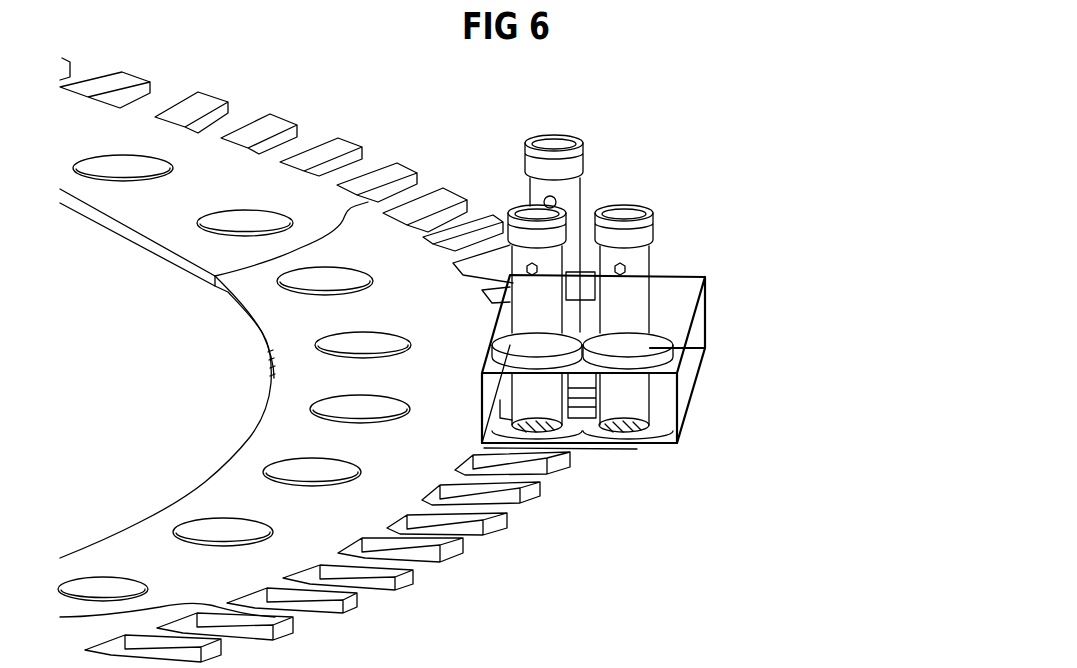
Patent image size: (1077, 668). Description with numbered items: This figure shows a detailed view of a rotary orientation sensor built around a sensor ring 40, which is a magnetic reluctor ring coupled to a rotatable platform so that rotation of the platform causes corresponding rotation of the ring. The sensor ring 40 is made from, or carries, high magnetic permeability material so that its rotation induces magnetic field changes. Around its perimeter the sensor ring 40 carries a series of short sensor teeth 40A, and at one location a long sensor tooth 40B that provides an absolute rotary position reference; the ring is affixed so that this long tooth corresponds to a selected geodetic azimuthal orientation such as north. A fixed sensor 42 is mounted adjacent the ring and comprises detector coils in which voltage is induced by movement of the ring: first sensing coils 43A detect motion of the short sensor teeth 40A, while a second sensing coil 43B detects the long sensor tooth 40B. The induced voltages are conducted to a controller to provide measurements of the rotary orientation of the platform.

The sensor ring 40 is at (293, 386).
The short sensor teeth 40A is at (507, 517).
The long sensor tooth 40B is at (677, 443).
The fixed sensor 42 is at (693, 330).
The first sensing coils 43A is at (582, 174).
The second sensing coil 43B is at (703, 276).